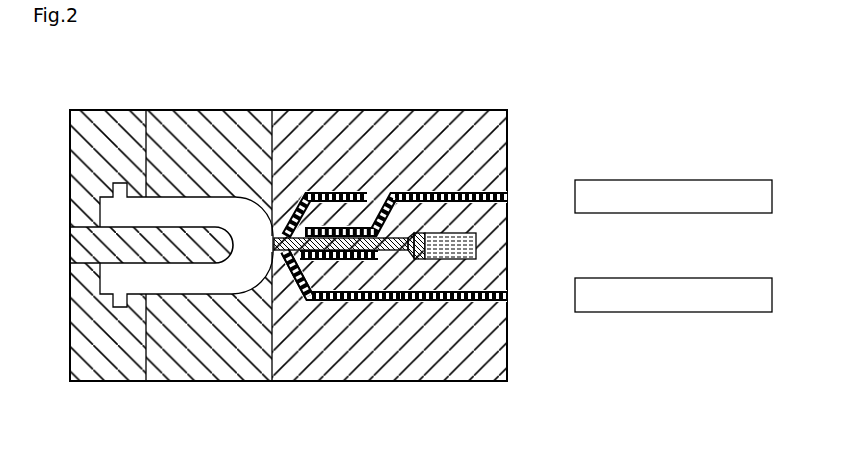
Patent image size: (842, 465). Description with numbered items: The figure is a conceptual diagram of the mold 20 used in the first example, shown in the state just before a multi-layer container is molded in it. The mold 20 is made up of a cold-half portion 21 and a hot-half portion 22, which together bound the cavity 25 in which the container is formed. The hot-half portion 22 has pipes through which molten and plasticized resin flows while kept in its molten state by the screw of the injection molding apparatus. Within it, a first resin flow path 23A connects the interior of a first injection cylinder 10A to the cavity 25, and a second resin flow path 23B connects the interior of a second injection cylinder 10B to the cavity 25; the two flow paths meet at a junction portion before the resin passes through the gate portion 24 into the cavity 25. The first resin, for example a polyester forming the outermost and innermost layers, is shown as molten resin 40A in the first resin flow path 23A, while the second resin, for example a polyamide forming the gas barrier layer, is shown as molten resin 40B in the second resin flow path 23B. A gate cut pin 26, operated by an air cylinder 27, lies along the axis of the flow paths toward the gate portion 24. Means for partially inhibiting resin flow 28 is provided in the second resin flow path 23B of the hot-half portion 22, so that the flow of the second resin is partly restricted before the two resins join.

The mold 20 is at (288, 232).
The cold-half portion 21 is at (226, 143).
The hot-half portion 22 is at (324, 140).
The first resin flow path 23A is at (347, 300).
The second resin flow path 23B is at (367, 225).
The gate portion 24 is at (243, 290).
The cavity 25 is at (170, 200).
The gate cut pin 26 is at (400, 252).
The air cylinder 27 is at (476, 250).
The means for partially inhibiting resin flow 28 is at (298, 286).
The molten resin 40A is at (457, 300).
The molten resin 40B is at (475, 192).
The first injection cylinder 10A is at (575, 296).
The second injection cylinder 10B is at (575, 198).